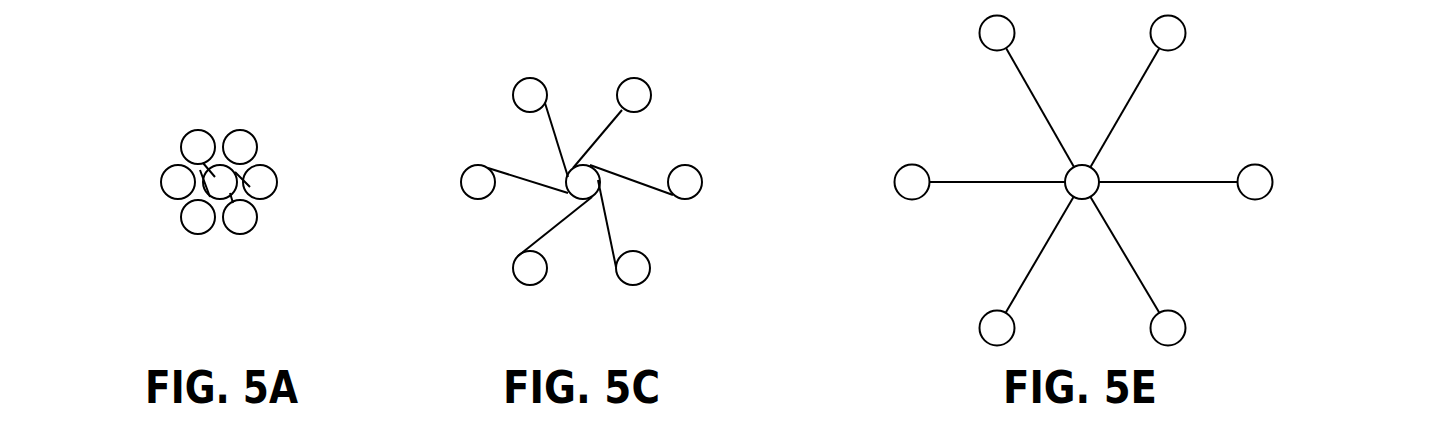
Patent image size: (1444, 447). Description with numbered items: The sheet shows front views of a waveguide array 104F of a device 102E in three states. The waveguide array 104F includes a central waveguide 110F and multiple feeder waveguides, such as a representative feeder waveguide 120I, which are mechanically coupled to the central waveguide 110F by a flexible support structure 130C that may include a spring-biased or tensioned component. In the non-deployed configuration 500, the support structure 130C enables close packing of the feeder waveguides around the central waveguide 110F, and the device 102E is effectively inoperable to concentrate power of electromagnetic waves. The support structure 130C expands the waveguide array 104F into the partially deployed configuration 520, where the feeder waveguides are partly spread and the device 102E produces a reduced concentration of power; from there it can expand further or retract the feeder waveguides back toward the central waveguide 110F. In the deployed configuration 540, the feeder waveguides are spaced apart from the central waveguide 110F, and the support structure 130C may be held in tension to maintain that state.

In FIG. 5A, the waveguide array 104F is at (275, 136).
In FIG. 5C, the waveguide array 104F is at (641, 162).
In FIG. 5E, the waveguide array 104F is at (1061, 193).
In FIG. 5A, the feeder waveguide 120I is at (203, 128).
In FIG. 5C, the feeder waveguide 120I is at (532, 78).
In FIG. 5E, the feeder waveguide 120I is at (993, 52).
In FIG. 5A, the central waveguide 110F is at (219, 165).
In FIG. 5C, the central waveguide 110F is at (573, 167).
In FIG. 5E, the central waveguide 110F is at (1093, 167).
In FIG. 5A, the non-deployed configuration 500 is at (269, 187).
In FIG. 5A, the device 102E is at (275, 187).
In FIG. 5C, the support structure 130C is at (630, 181).
In FIG. 5E, the support structure 130C is at (1166, 180).
In FIG. 5C, the partially deployed configuration 520 is at (641, 187).
In FIG. 5E, the deployed configuration 540 is at (1061, 193).